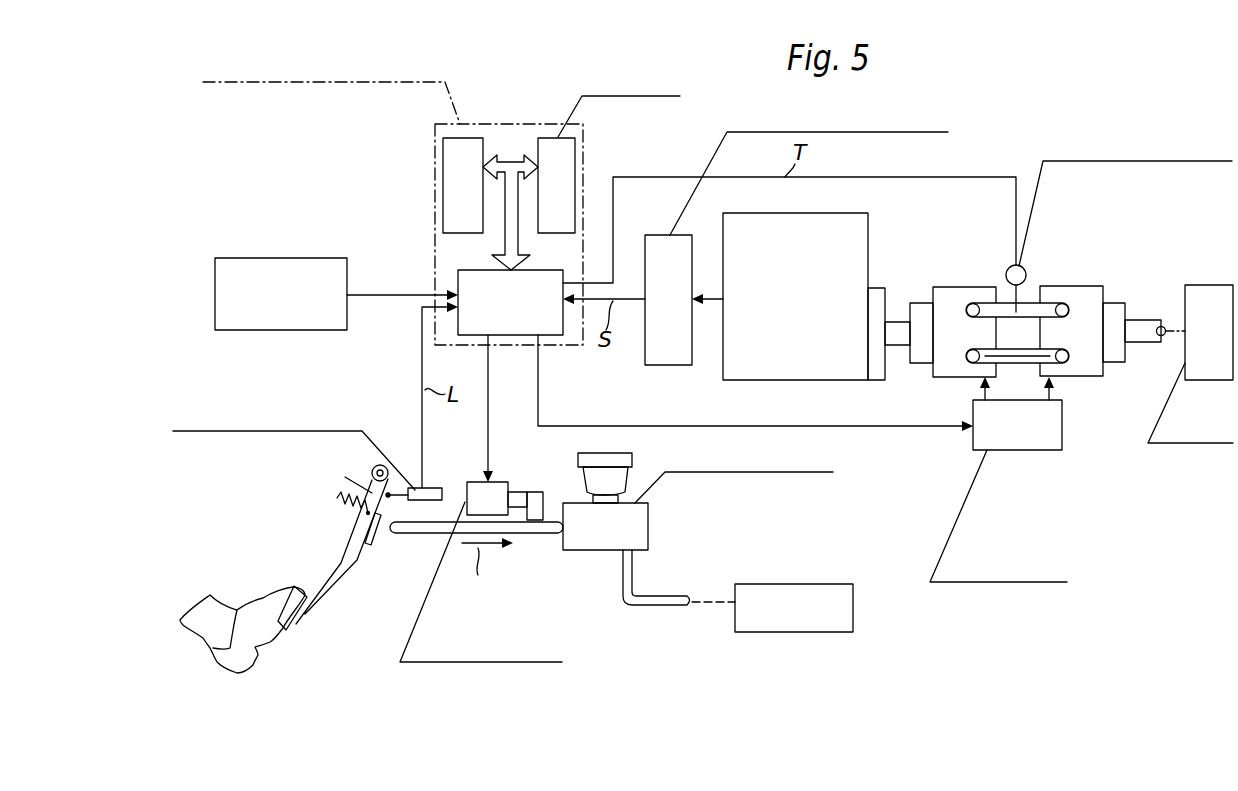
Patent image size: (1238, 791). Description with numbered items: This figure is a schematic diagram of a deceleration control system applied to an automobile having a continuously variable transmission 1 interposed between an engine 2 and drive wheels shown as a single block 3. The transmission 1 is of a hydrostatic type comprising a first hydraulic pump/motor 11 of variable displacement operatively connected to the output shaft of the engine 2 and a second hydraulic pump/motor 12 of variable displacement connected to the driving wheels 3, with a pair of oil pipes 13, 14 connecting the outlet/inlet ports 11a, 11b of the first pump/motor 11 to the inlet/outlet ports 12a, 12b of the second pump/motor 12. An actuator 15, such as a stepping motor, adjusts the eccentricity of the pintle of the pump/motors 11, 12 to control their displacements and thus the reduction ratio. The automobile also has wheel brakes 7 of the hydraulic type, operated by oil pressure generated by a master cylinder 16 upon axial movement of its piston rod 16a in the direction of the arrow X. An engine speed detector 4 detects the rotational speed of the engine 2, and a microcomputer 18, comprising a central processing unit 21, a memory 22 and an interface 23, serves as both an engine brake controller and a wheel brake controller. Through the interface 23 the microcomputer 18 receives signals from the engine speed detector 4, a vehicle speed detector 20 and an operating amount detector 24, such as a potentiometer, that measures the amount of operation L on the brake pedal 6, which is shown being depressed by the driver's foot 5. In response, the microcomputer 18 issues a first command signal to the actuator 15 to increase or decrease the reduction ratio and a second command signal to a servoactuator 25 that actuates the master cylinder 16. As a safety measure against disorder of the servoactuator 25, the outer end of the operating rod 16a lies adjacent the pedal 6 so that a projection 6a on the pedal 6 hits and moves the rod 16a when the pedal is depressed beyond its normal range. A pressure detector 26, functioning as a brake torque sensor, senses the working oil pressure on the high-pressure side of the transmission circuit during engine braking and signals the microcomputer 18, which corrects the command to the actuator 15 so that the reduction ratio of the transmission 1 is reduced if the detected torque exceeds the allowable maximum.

The continuously variable transmission 1 is at (1092, 402).
The engine 2 is at (850, 213).
The drive wheels 3 is at (1207, 285).
The engine speed detector 4 is at (657, 235).
The clutch pedal 5 is at (265, 602).
The brake pedal 6 is at (340, 565).
The projection 6a is at (374, 546).
The wheel brakes 7 is at (795, 584).
The first hydraulic pump/motor 11 is at (943, 287).
The outlet/inlet port 11a is at (973, 304).
The outlet/inlet port 11b is at (971, 358).
The second hydraulic pump/motor 12 is at (1097, 287).
The inlet/outlet port 12a is at (1061, 305).
The inlet/outlet port 12b is at (1063, 363).
The oil pipe 13 is at (1027, 305).
The oil pipe 14 is at (988, 358).
The actuator 15 is at (1020, 450).
The master cylinder 16 is at (648, 512).
The piston rod 16a is at (542, 537).
The microcomputer 18 is at (518, 124).
The vehicle speed detector 20 is at (283, 258).
The central processing unit 21 is at (443, 150).
The memory 22 is at (575, 147).
The interface 23 is at (458, 272).
The operating amount detector 24 is at (412, 488).
The servoactuator 25 is at (498, 482).
The pressure detector 26 is at (1025, 270).